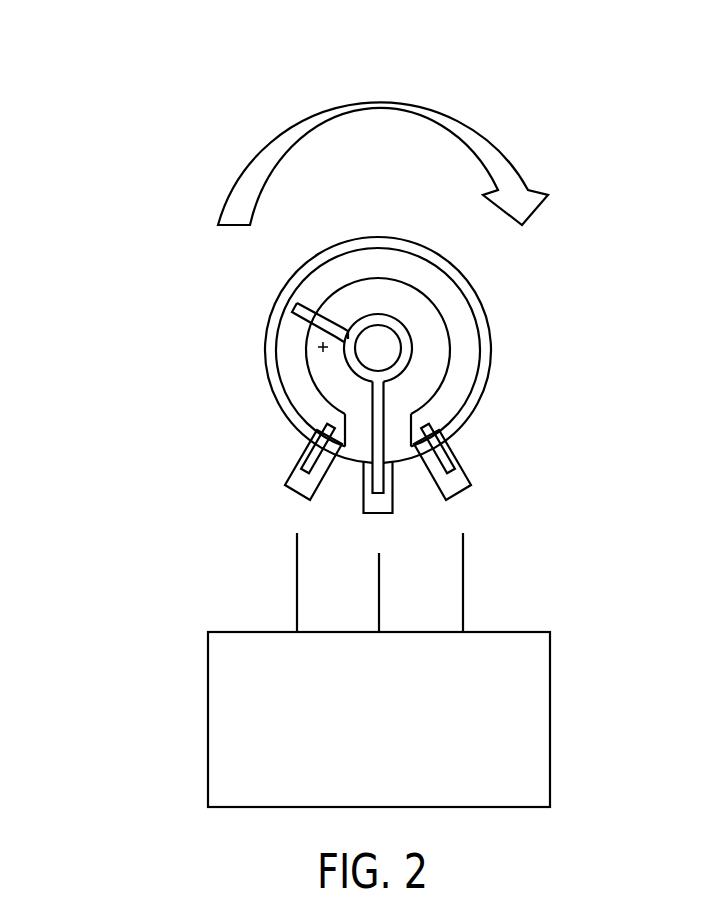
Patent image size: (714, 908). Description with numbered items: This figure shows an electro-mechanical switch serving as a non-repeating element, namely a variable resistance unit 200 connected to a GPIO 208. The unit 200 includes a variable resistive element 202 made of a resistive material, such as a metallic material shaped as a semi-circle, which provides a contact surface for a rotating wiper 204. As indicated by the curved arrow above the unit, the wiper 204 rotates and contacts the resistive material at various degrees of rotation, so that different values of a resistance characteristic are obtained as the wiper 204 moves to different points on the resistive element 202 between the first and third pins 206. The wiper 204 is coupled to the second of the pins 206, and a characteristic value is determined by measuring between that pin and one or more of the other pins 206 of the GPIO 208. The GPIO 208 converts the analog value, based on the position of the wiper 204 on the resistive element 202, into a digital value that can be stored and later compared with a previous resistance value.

The variable resistance unit 200 is at (135, 98).
The variable resistive element 202 is at (492, 331).
The wiper 204 is at (288, 302).
The pins 206 is at (512, 570).
The GPIO 208 is at (550, 710).